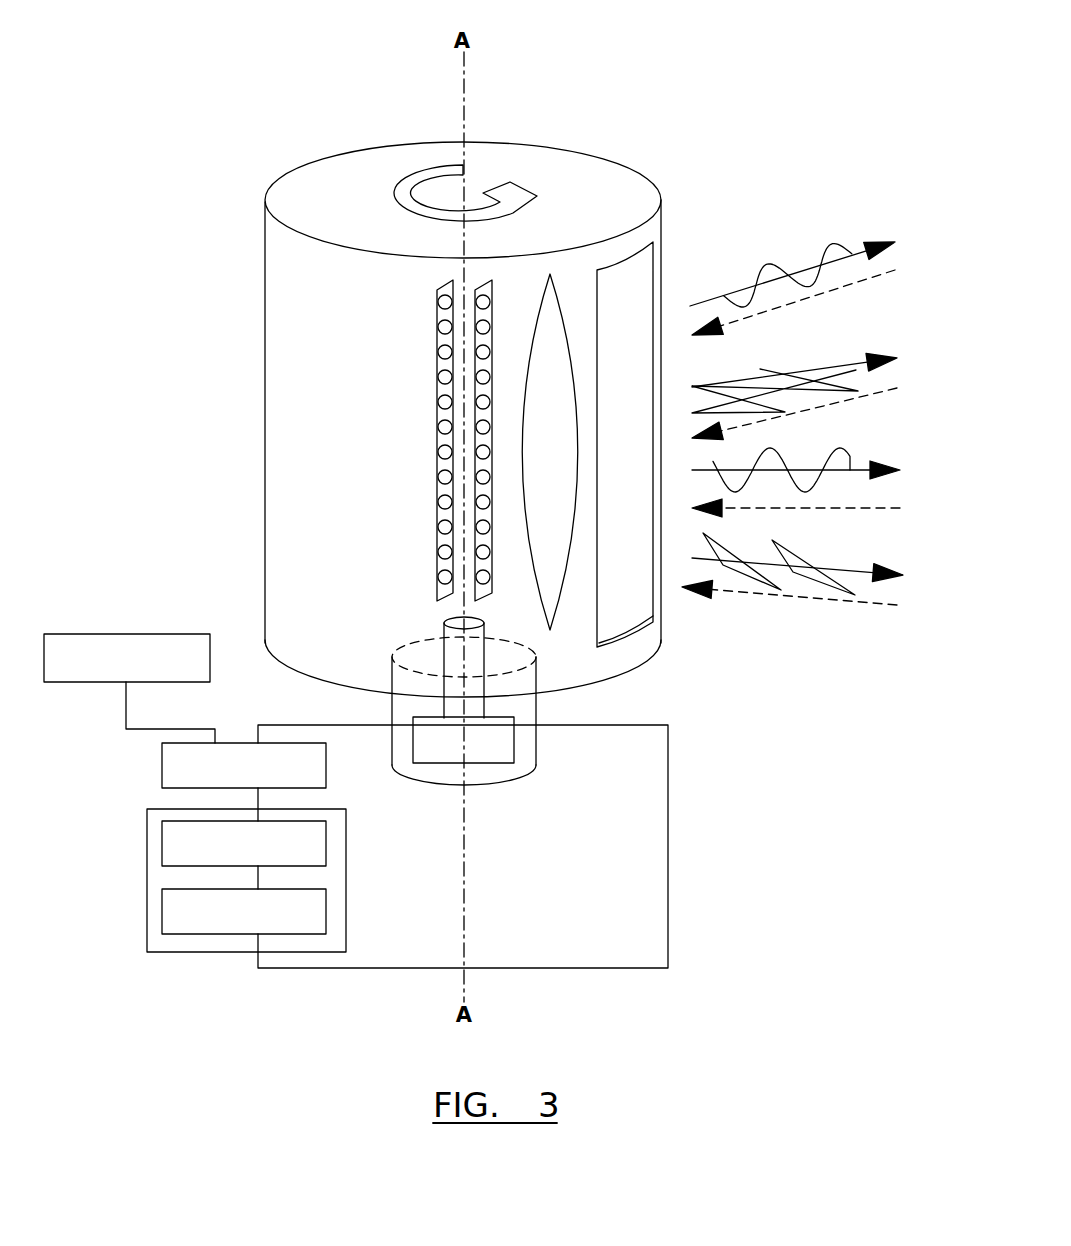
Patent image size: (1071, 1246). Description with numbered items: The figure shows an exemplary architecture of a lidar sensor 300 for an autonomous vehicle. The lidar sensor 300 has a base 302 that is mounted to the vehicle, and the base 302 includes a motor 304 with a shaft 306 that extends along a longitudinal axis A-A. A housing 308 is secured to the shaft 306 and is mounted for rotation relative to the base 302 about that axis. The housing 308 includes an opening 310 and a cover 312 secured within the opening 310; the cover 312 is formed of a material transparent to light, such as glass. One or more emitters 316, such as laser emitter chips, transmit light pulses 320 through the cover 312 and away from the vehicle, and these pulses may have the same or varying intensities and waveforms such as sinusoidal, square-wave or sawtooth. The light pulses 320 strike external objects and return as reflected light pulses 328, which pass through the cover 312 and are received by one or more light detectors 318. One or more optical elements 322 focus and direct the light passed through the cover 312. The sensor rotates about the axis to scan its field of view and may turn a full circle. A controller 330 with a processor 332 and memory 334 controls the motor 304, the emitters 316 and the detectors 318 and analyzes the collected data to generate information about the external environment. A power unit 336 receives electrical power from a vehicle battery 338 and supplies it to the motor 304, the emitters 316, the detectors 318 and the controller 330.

The lidar sensor 300 is at (233, 90).
The base 302 is at (503, 782).
The motor 304 is at (514, 742).
The shaft 306 is at (444, 622).
The housing 308 is at (266, 228).
The opening 310 is at (625, 250).
The cover 312 is at (643, 277).
The emitters 316 is at (488, 282).
The light detectors 318 is at (437, 316).
The light pulses 320 is at (833, 240).
The optical elements 322 is at (551, 275).
The reflected light pulses 328 is at (860, 282).
The controller 330 is at (204, 898).
The processor 332 is at (161, 905).
The memory 334 is at (161, 842).
The power unit 336 is at (161, 762).
The vehicle battery 338 is at (116, 634).